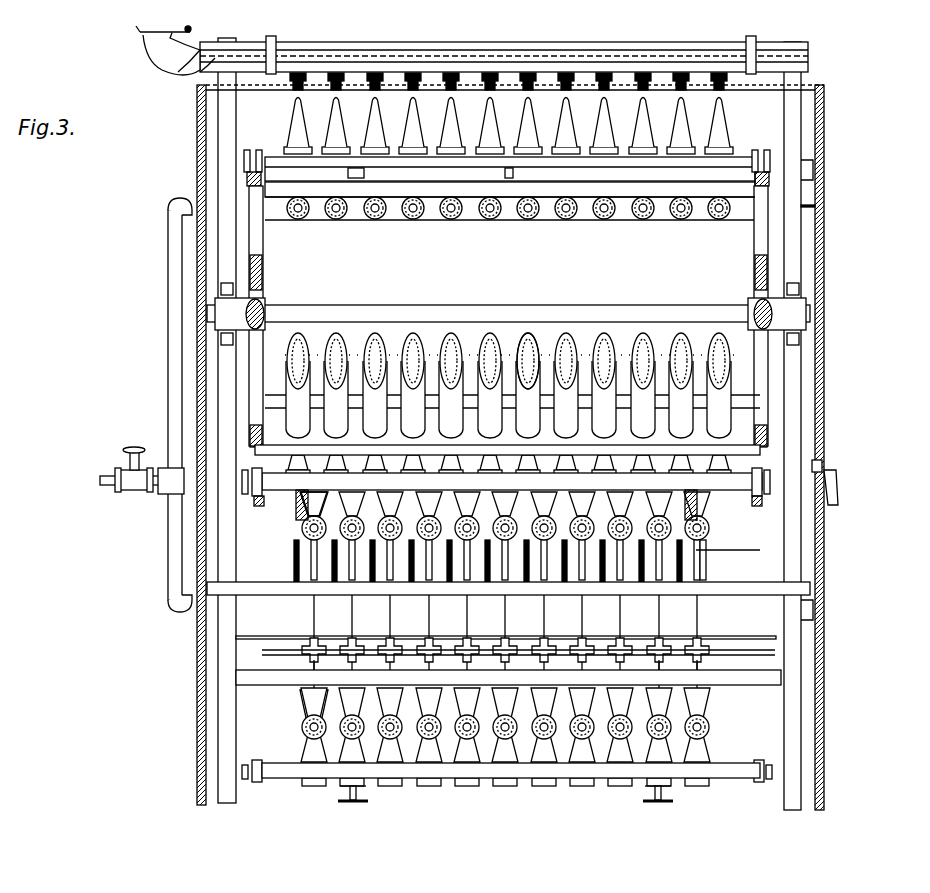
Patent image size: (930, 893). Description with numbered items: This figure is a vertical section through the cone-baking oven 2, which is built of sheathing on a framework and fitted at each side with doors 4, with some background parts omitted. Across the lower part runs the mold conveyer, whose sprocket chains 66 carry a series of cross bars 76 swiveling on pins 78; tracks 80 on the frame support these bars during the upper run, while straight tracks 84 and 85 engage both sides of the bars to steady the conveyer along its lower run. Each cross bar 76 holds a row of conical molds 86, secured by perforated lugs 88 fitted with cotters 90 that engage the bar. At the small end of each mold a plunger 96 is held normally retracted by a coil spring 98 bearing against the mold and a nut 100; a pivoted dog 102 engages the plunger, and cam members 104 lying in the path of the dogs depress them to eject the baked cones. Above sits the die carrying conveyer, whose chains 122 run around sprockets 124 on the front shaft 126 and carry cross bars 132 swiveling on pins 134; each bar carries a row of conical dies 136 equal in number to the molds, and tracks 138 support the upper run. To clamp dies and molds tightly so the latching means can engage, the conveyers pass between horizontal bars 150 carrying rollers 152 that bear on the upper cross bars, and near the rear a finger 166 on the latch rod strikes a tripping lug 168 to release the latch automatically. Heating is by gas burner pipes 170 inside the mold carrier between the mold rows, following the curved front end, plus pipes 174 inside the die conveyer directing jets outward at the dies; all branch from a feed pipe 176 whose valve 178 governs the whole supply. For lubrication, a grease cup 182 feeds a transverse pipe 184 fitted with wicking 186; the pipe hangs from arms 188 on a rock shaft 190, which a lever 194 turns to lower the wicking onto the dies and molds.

The oven 2 is at (780, 84).
The doors 4 is at (200, 100).
The sprocket chains 66 is at (248, 490).
The cross bars 76 is at (786, 520).
The pins 78 is at (790, 482).
The tracks 80 is at (296, 505).
The straight tracks 84 is at (348, 798).
The straight tracks 85 is at (310, 780).
The molds 86 is at (305, 510).
The perforated lugs 88 is at (484, 585).
The cotters 90 is at (545, 585).
The plunger 96 is at (715, 570).
The coil spring 98 is at (712, 540).
The nut 100 is at (690, 590).
The dog 102 is at (700, 700).
The cam members 104 is at (240, 675).
The chains 122 is at (250, 160).
The sprockets 124 is at (255, 240).
The shaft 126 is at (618, 315).
The cross bars 132 is at (720, 168).
The pins 134 is at (255, 158).
The conical dies 136 is at (690, 125).
The tracks 138 is at (366, 212).
The horizontal bars 150 is at (310, 605).
The rollers 152 is at (310, 588).
The finger 166 is at (510, 195).
The tripping lug 168 is at (540, 470).
The gas burner pipes 170 is at (300, 550).
The pipes 174 is at (302, 214).
The feed pipe 176 is at (104, 483).
The valve 178 is at (132, 446).
The grease cup 182 is at (150, 52).
The pipe 184 is at (545, 60).
The wicking 186 is at (472, 72).
The arms 188 is at (272, 40).
The rock shaft 190 is at (638, 50).
The lever 194 is at (195, 55).